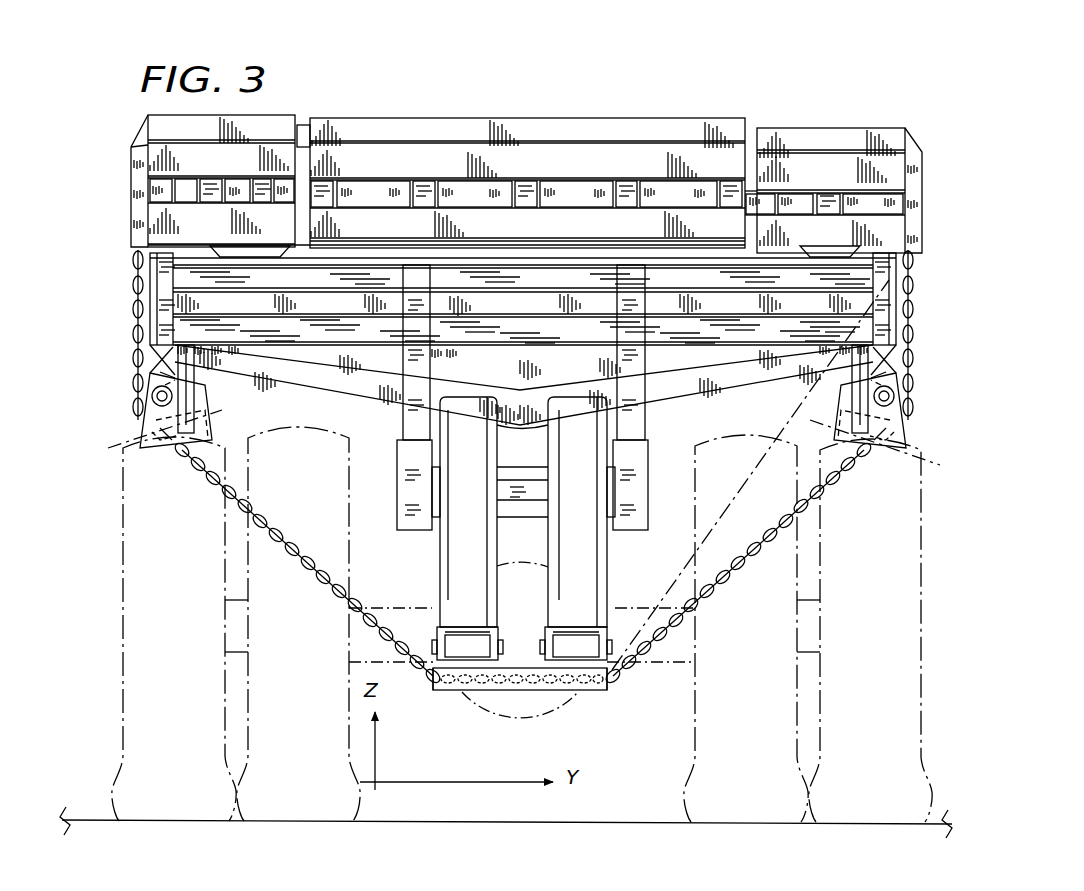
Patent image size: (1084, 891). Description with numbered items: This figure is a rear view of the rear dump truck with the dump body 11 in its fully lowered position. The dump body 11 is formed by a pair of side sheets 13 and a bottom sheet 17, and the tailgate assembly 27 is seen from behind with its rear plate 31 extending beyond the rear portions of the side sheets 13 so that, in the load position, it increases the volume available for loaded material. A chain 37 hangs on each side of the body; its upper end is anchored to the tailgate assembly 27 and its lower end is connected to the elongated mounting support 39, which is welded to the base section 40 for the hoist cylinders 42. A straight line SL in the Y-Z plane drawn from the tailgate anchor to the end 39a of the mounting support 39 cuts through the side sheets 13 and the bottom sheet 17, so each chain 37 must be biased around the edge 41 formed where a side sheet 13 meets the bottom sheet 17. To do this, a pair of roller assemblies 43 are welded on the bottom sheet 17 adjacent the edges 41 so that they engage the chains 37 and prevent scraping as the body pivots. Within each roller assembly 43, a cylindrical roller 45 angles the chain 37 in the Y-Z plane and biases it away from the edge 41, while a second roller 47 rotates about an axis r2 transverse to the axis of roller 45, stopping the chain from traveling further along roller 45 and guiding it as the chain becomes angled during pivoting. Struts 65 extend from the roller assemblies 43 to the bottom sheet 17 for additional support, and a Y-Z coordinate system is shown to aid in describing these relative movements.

The dump body 11 is at (135, 267).
The side sheets 13 is at (163, 287).
The bottom sheet 17 is at (583, 343).
The tailgate assembly 27 is at (526, 163).
The rear plate 31 is at (458, 130).
The chain 37 is at (138, 323).
The mounting support 39 is at (537, 711).
The end of the mounting support 39a is at (430, 687).
The base section 40 is at (490, 641).
The edge 41 is at (148, 358).
The hoist cylinders 42 is at (568, 465).
The roller assemblies 43 is at (140, 418).
The cylindrical roller 45 is at (183, 348).
The roller 47 is at (165, 452).
The struts 65 is at (190, 366).
The straight line SL is at (757, 477).
The axis of rotation of roller 47 r2 is at (228, 408).